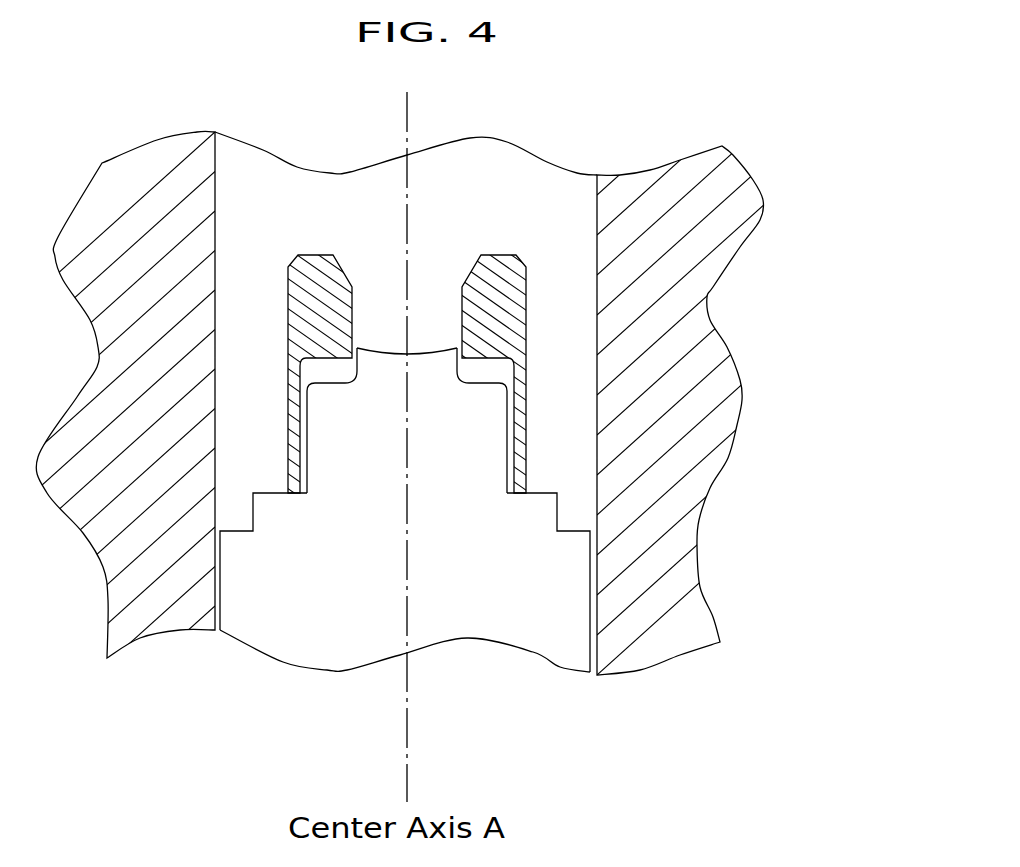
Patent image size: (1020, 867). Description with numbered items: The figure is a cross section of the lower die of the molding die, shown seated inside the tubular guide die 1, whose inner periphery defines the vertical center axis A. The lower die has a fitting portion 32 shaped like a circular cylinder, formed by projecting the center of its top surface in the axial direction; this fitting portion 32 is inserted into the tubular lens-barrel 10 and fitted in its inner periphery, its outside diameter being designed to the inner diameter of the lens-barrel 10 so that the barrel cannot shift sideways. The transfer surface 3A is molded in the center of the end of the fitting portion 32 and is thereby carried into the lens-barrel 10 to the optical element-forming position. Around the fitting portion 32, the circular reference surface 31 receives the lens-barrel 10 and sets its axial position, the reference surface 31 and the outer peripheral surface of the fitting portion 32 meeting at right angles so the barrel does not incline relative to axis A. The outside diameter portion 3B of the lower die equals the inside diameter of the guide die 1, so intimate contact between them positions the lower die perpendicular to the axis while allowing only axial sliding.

The guide die 1 is at (647, 440).
The lens-barrel 10 is at (503, 253).
The reference surface 31 is at (272, 495).
The fitting portion 32 is at (442, 425).
The transfer surface 3A is at (413, 355).
The outside diameter portion 3B is at (522, 575).